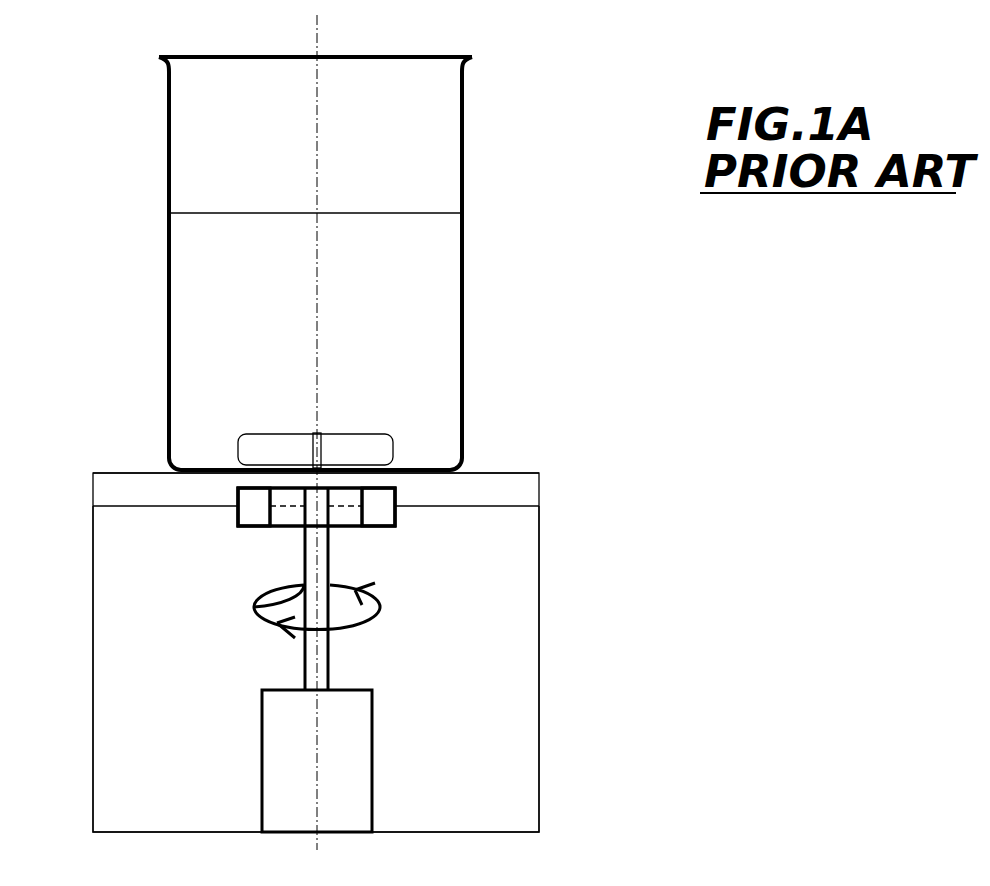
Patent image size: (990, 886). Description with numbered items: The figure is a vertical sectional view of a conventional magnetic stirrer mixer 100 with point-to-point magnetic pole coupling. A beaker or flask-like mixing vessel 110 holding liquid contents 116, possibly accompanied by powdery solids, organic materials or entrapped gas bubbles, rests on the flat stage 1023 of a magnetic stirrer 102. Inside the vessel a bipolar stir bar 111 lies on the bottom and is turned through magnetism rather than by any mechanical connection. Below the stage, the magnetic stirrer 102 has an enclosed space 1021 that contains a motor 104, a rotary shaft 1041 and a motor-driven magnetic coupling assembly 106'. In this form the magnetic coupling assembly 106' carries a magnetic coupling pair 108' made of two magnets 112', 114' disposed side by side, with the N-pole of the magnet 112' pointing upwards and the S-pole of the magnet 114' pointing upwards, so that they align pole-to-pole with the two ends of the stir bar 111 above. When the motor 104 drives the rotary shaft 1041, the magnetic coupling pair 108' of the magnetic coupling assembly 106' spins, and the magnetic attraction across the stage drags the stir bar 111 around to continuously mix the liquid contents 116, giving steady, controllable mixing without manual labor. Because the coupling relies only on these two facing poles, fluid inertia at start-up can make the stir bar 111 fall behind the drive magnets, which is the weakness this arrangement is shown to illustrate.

The magnetic stirrer mixer 100 is at (532, 62).
The mixing vessel 110 is at (462, 128).
The liquid contents 116 is at (415, 265).
The bipolar stir bar 111 is at (319, 447).
The magnetic stirrer 102 is at (539, 677).
The flat stage 1023 is at (132, 472).
The enclosed space 1021 is at (493, 703).
The motor 104 is at (355, 742).
The rotary shaft 1041 is at (330, 672).
The magnetic coupling assembly 106' is at (360, 553).
The magnet 112' is at (413, 528).
The magnet 114' is at (220, 528).
The magnetic coupling pair 108' is at (216, 307).